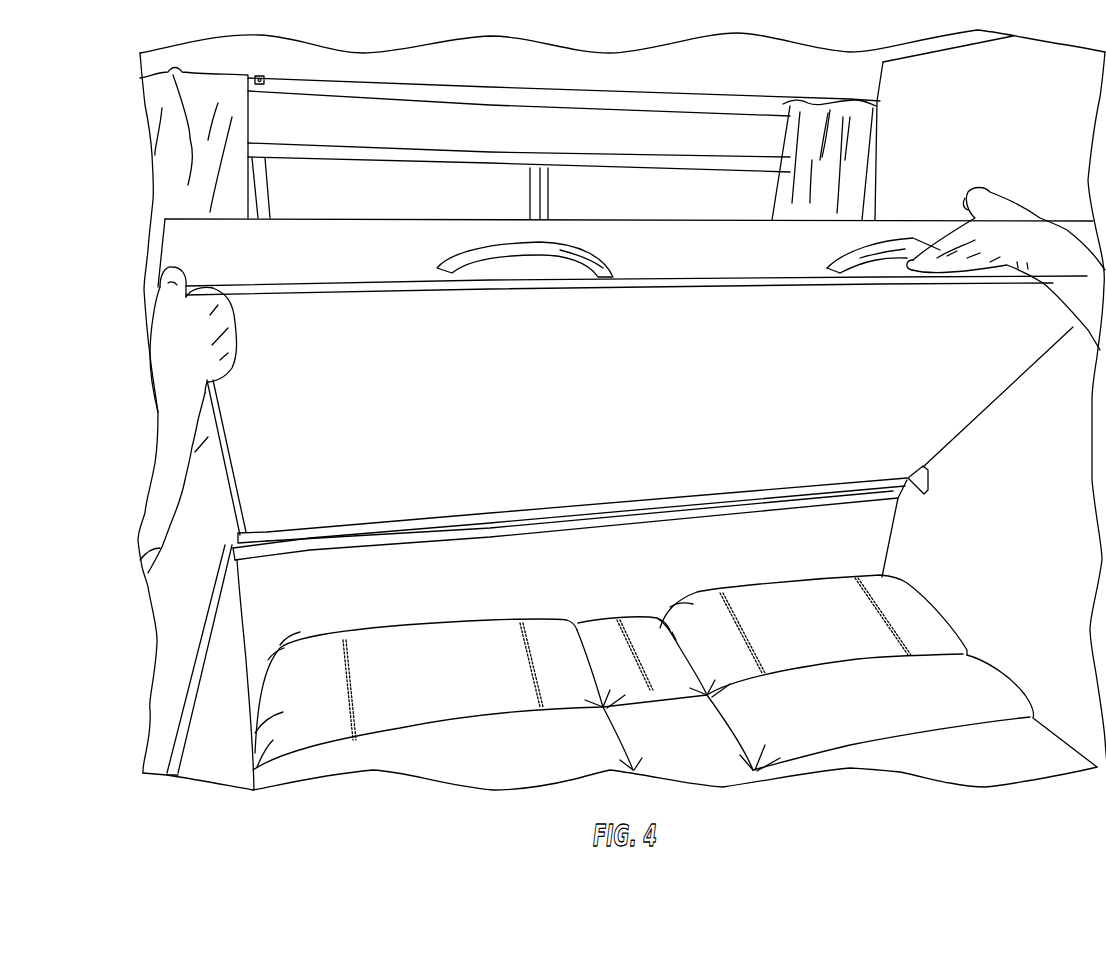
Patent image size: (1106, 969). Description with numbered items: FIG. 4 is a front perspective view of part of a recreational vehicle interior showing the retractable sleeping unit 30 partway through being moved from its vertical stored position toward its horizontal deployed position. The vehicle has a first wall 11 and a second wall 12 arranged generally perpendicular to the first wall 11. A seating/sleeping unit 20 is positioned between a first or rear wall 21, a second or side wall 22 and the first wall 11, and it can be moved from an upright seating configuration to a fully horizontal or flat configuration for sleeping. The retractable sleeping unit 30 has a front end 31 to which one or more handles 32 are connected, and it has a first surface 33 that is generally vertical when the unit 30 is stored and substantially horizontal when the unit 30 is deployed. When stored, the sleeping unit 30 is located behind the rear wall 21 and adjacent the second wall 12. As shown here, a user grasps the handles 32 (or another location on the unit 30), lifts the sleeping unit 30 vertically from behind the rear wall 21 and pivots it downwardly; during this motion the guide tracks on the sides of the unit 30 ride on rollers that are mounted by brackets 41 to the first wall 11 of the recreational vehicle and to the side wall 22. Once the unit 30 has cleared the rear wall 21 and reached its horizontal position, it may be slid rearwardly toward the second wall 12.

The first wall 11 is at (1009, 570).
The second wall 12 is at (740, 86).
The seating/sleeping unit 20 is at (923, 677).
The first or rear wall 21 is at (870, 538).
The second or side wall 22 is at (233, 622).
The retractable sleeping unit 30 is at (878, 214).
The front end 31 is at (692, 233).
The handles 32 is at (550, 240).
The first surface 33 is at (960, 391).
The brackets 41 is at (921, 479).